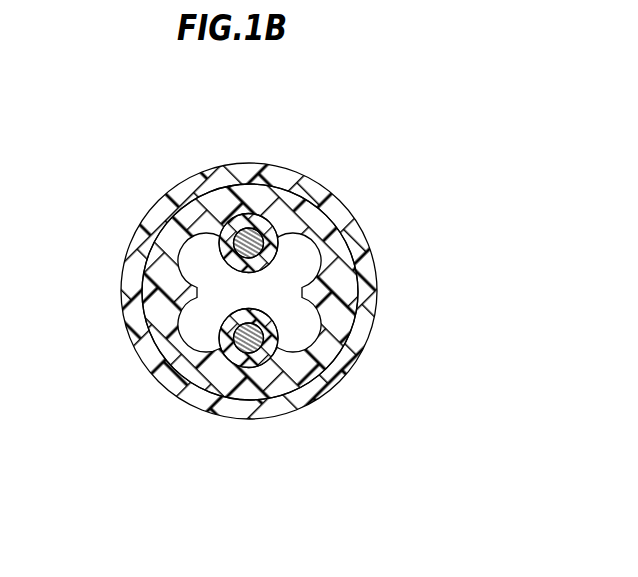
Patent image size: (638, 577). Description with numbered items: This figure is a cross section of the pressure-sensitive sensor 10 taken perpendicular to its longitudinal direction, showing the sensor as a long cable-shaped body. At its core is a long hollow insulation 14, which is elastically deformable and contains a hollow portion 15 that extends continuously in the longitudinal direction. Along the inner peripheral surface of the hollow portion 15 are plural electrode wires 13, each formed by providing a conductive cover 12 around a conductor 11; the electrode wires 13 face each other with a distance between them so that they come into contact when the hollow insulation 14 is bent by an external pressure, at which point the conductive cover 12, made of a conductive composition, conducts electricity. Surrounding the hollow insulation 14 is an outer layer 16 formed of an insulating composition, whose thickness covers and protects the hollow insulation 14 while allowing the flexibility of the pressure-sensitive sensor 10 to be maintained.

The pressure-sensitive sensor 10 is at (303, 246).
The conductor 11 is at (262, 240).
The conductive cover 12 is at (267, 230).
The electrode wire 13 is at (352, 270).
The hollow insulation 14 is at (323, 337).
The hollow portion 15 is at (301, 288).
The outer layer 16 is at (314, 386).